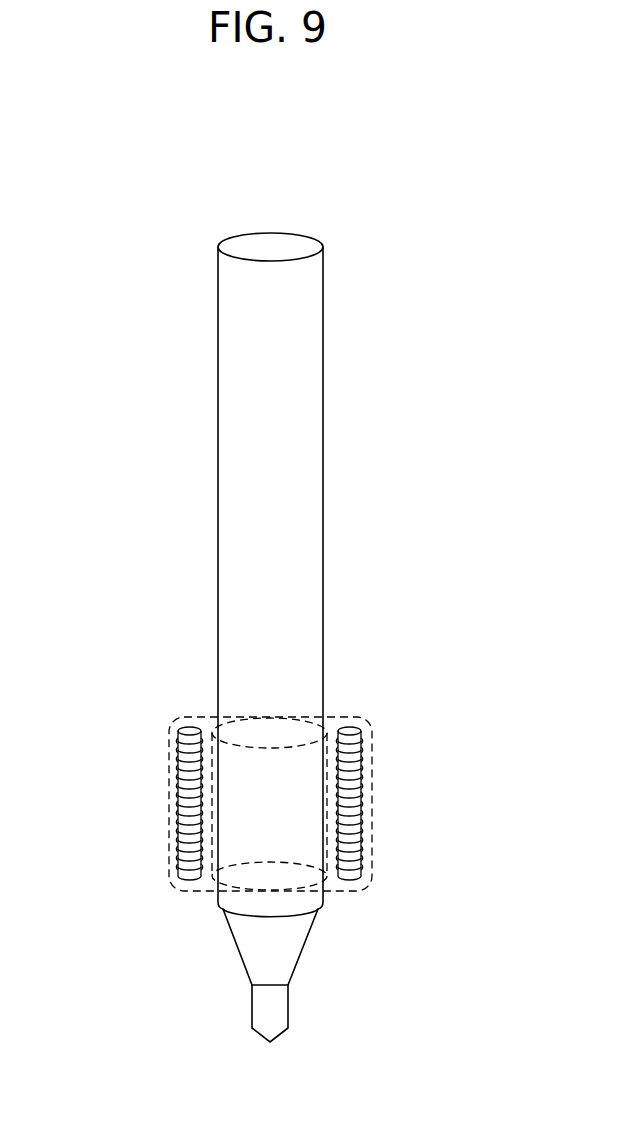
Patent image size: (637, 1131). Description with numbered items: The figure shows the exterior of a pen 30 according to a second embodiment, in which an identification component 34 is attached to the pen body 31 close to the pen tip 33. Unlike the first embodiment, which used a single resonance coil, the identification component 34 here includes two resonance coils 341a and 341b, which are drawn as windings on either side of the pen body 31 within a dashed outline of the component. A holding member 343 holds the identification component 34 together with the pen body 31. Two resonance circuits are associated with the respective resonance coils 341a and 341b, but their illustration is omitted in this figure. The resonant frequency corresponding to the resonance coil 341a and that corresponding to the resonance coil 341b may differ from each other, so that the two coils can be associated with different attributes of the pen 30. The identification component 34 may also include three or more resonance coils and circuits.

The pen 30 is at (372, 202).
The pen body 31 is at (323, 465).
The pen tip 33 is at (283, 1033).
The identification component 34 is at (360, 687).
The resonance coil 341a is at (362, 805).
The resonance coil 341b is at (178, 805).
The holding member 343 is at (270, 717).